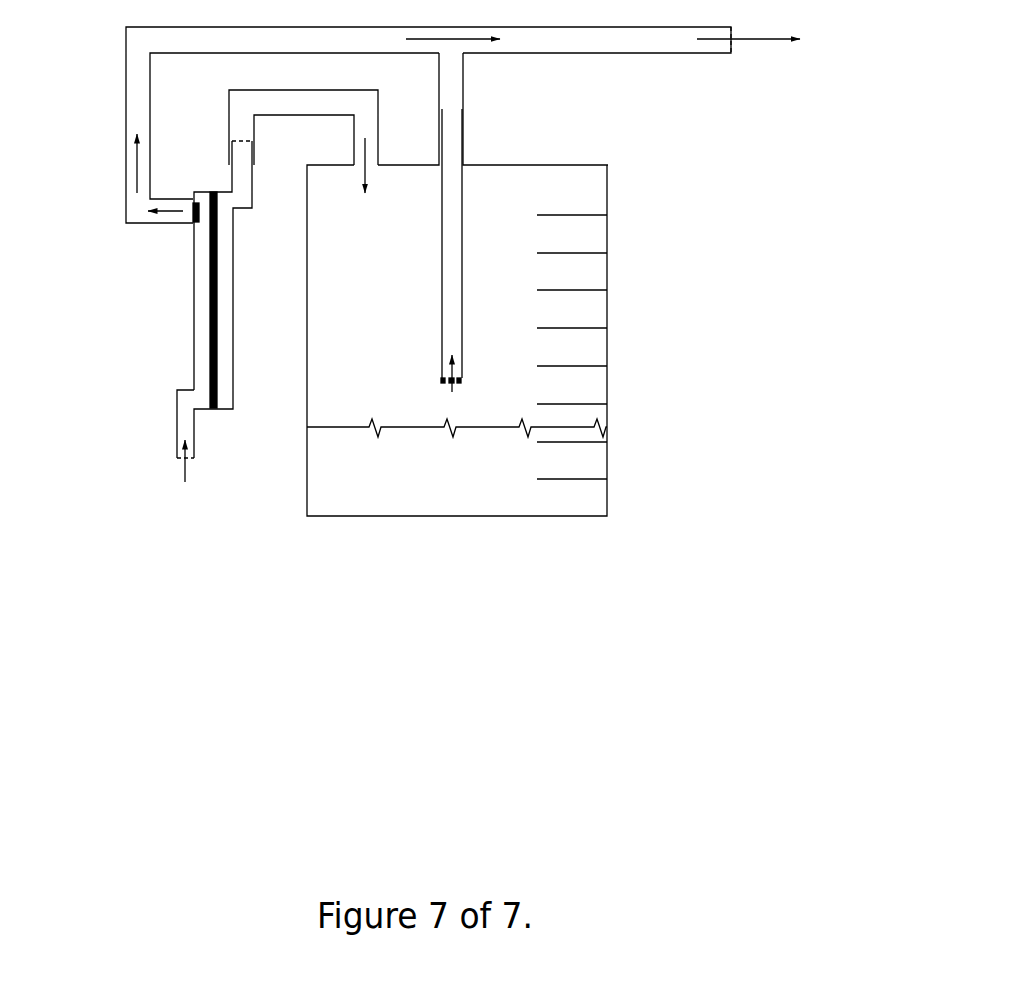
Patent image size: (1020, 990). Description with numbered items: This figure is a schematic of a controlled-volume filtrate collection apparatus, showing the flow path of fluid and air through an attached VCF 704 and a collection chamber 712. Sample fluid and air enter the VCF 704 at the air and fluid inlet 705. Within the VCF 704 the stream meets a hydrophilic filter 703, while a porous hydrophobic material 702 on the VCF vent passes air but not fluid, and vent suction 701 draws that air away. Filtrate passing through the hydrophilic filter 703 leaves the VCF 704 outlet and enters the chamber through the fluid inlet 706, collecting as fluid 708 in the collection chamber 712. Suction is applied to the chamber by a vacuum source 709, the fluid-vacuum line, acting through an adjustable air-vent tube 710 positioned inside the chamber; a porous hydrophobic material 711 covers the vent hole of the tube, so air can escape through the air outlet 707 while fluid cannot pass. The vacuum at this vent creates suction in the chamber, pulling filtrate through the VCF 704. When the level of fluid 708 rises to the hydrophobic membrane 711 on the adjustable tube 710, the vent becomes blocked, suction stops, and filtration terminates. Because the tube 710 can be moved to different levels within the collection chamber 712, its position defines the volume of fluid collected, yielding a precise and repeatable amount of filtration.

The vent suction 701 is at (397, 125).
The porous hydrophobic material 702 is at (183, 223).
The hydrophilic filter 703 is at (207, 301).
The VCF 704 is at (150, 407).
The air and fluid inlet 705 is at (191, 476).
The fluid inlet 706 is at (308, 157).
The air outlet 707 is at (455, 386).
The fluid 708 is at (457, 451).
The vacuum source 709 is at (774, 40).
The adjustable air-vent tube 710 is at (474, 262).
The porous hydrophobic material 711 is at (478, 372).
The collection chamber 712 is at (650, 413).